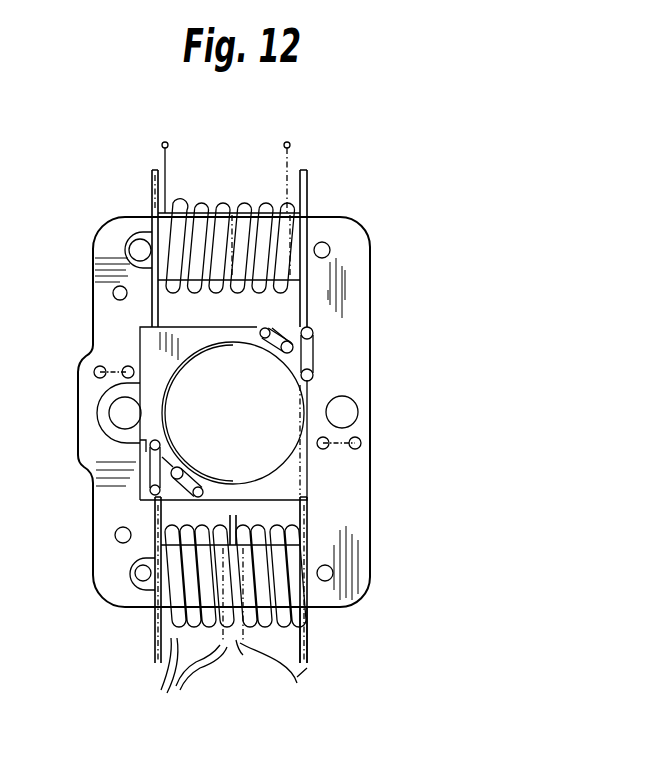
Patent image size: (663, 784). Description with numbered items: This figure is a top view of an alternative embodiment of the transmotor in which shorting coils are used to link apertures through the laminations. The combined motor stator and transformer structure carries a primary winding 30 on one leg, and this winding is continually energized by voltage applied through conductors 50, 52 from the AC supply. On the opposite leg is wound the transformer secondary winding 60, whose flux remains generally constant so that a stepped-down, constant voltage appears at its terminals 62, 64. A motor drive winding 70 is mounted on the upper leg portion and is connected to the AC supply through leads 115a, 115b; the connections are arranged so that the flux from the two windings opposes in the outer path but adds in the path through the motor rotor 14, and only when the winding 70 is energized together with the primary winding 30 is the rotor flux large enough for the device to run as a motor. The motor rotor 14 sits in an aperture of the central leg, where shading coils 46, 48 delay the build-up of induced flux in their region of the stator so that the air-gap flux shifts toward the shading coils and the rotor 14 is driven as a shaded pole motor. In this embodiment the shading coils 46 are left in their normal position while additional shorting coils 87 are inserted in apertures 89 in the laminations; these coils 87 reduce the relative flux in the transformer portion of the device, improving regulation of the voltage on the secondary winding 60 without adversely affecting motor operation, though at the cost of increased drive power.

The motor rotor 14 is at (246, 426).
The primary winding 30 is at (282, 521).
The shading coil 46 is at (313, 343).
The shading coil 48 is at (267, 355).
The conductor 50 is at (297, 684).
The conductor 52 is at (310, 670).
The transformer secondary winding 60 is at (184, 517).
The terminal 62 is at (168, 697).
The terminal 64 is at (187, 693).
The motor drive winding 70 is at (233, 196).
The shorting coil 87 is at (107, 362).
The aperture 89 is at (92, 373).
The lead 115a is at (287, 142).
The lead 115b is at (165, 142).